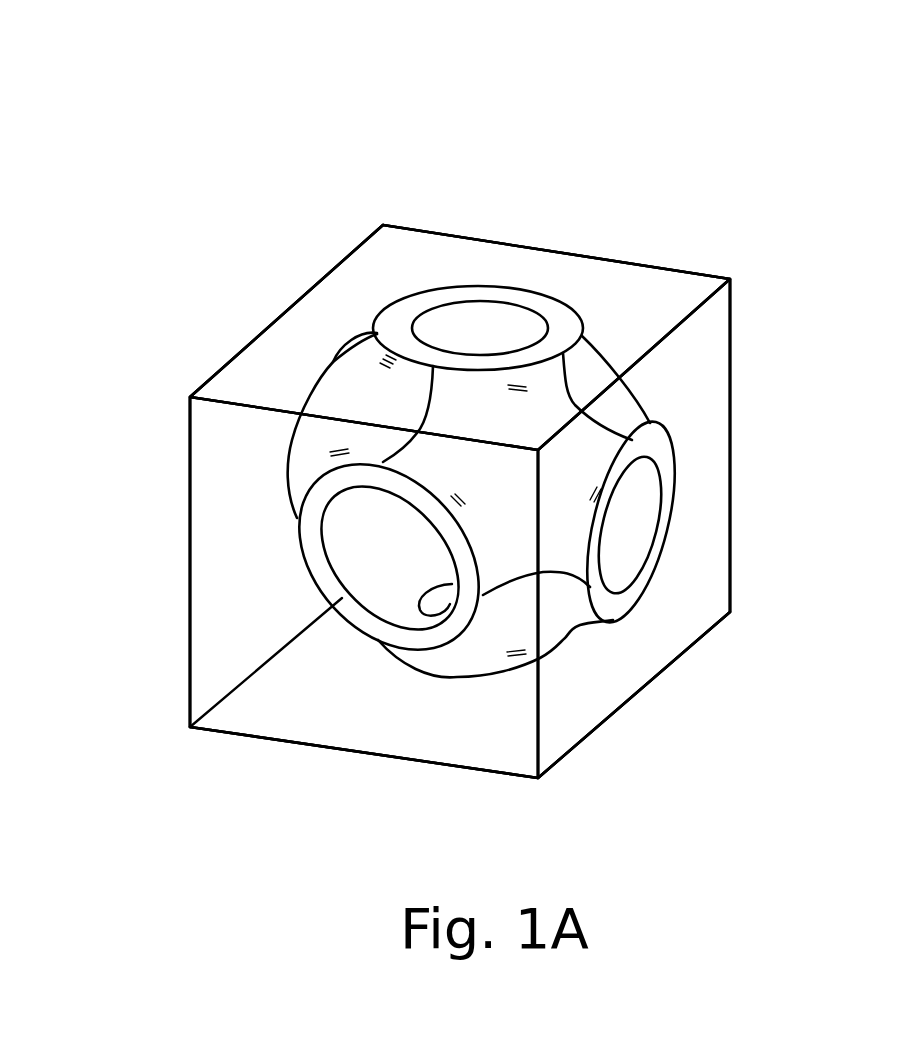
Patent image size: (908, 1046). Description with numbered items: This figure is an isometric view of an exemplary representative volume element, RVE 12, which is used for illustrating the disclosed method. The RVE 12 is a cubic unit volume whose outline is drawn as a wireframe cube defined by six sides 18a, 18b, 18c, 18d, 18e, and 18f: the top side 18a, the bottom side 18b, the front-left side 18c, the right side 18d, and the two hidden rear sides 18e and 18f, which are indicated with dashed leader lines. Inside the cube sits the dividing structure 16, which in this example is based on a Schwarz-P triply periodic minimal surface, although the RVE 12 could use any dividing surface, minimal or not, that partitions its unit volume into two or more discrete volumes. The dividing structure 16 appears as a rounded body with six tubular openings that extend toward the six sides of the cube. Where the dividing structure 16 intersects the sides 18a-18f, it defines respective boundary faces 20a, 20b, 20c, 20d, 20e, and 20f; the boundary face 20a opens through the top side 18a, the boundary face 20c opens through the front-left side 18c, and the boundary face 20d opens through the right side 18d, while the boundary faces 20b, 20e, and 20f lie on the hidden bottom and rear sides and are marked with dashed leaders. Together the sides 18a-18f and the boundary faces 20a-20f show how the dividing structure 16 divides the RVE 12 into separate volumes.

The representative volume element 12 is at (702, 125).
The dividing structure 16 is at (372, 377).
The side 18a is at (420, 259).
The side 18b is at (468, 722).
The side 18c is at (361, 693).
The side 18d is at (706, 528).
The side 18e is at (691, 368).
The side 18f is at (255, 488).
The boundary face 20a is at (552, 306).
The boundary face 20b is at (437, 668).
The boundary face 20c is at (352, 603).
The boundary face 20d is at (648, 570).
The boundary face 20e is at (601, 348).
The boundary face 20f is at (315, 398).